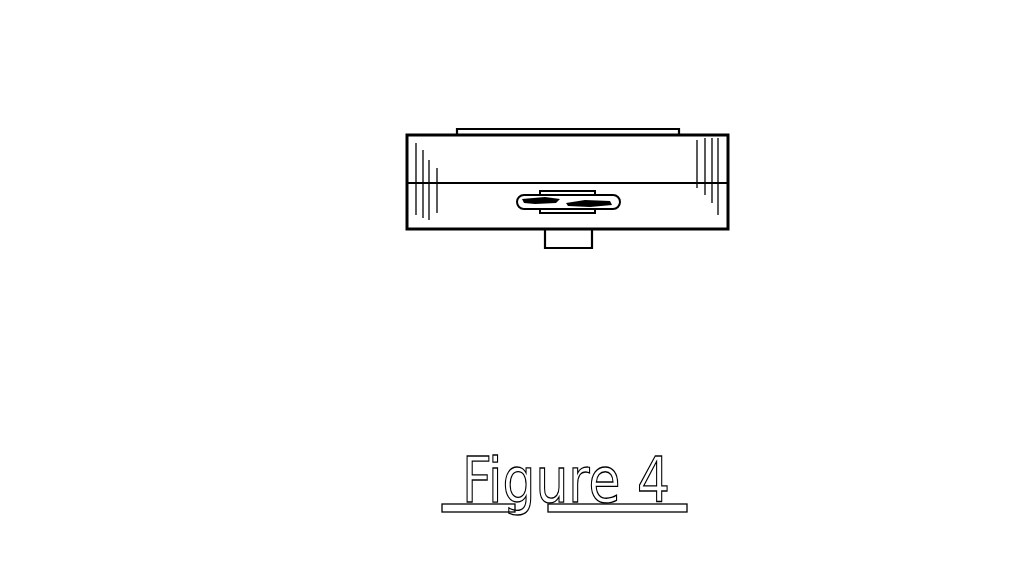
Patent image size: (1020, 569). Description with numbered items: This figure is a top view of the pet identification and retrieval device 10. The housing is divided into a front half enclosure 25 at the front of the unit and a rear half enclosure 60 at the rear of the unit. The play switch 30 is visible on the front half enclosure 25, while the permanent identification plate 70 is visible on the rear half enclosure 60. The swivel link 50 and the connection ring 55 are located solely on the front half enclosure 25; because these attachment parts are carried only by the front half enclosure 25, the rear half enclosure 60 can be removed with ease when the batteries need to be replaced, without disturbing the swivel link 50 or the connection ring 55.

The pet identification and retrieval device 10 is at (210, 245).
The front half enclosure 25 is at (478, 210).
The play switch 30 is at (578, 237).
The swivel link 50 is at (548, 212).
The connection ring 55 is at (527, 197).
The rear half enclosure 60 is at (449, 151).
The permanent identification plate 70 is at (580, 128).